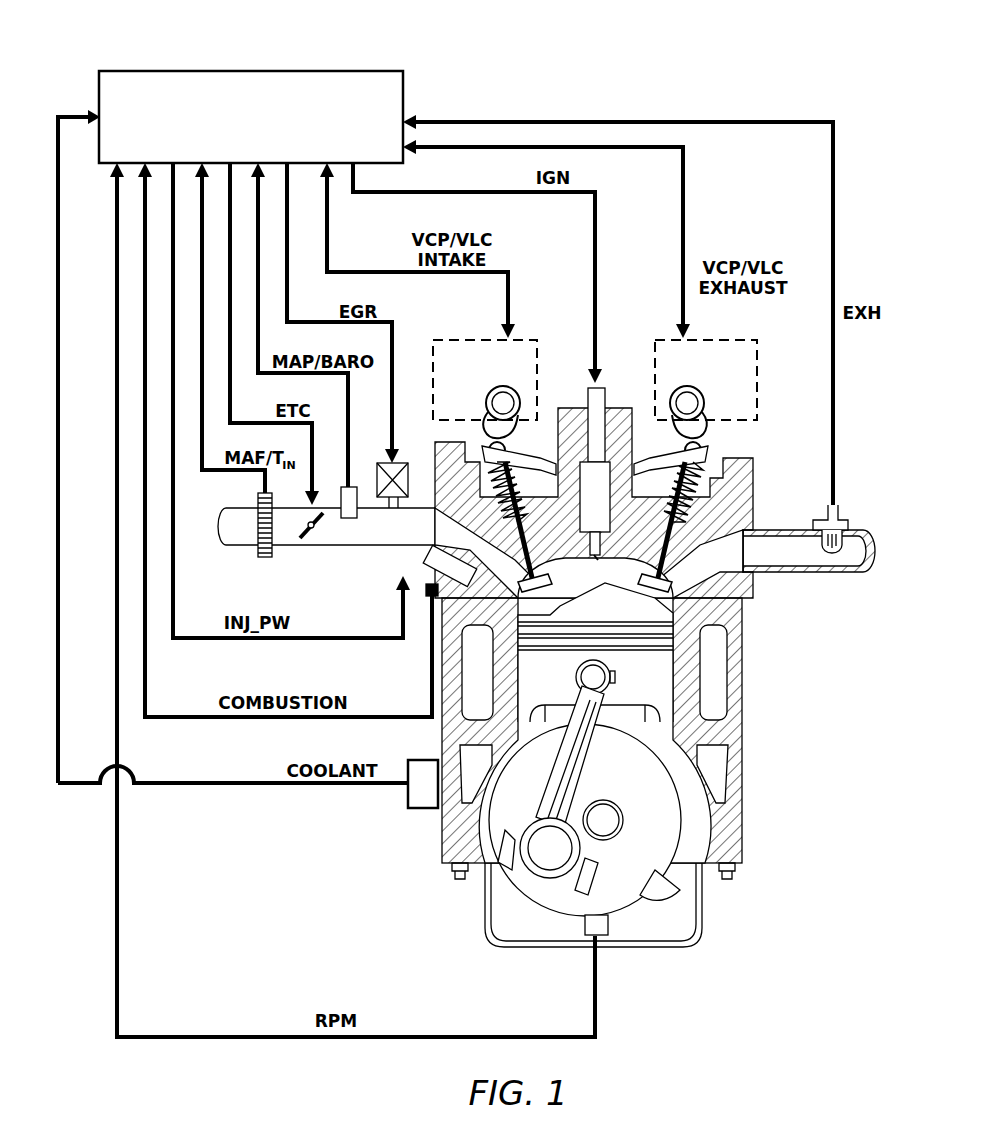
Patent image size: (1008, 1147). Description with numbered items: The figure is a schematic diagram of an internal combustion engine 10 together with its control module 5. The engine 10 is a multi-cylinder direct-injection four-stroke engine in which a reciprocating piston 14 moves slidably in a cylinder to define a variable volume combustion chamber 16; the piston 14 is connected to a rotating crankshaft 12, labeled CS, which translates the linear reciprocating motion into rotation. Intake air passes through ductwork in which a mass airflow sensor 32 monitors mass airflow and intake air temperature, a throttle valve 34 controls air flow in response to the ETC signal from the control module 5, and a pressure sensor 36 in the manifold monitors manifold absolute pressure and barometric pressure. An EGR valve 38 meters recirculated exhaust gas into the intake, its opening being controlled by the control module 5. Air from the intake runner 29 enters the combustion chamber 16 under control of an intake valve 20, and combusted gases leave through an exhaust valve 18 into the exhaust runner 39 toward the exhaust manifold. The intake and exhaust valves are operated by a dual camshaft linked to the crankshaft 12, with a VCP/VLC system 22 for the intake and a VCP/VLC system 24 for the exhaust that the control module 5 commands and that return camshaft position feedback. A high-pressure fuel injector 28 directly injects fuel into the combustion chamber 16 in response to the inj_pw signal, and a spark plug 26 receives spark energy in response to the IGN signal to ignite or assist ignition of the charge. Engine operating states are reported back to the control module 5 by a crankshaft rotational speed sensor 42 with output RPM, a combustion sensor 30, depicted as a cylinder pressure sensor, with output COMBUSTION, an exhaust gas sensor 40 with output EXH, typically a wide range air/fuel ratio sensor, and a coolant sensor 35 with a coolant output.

The control module 5 is at (362, 76).
The internal combustion engine 10 is at (733, 730).
The crankshaft 12 is at (650, 878).
The piston 14 is at (653, 688).
The combustion chamber 16 is at (572, 599).
The exhaust valve 18 is at (668, 558).
The intake valve 20 is at (528, 546).
The intake VCP/VLC system 22 is at (532, 338).
The exhaust VCP/VLC system 24 is at (747, 399).
The spark plug 26 is at (603, 388).
The fuel injector 28 is at (420, 556).
The intake runner 29 is at (418, 515).
The combustion sensor 30 is at (435, 597).
The mass airflow sensor 32 is at (263, 557).
The throttle valve 34 is at (307, 543).
The coolant sensor 35 is at (423, 790).
The pressure sensor 36 is at (345, 518).
The EGR valve 38 is at (383, 497).
The exhaust runner 39 is at (733, 543).
The exhaust gas sensor 40 is at (838, 515).
The crankshaft rotational speed sensor 42 is at (580, 938).